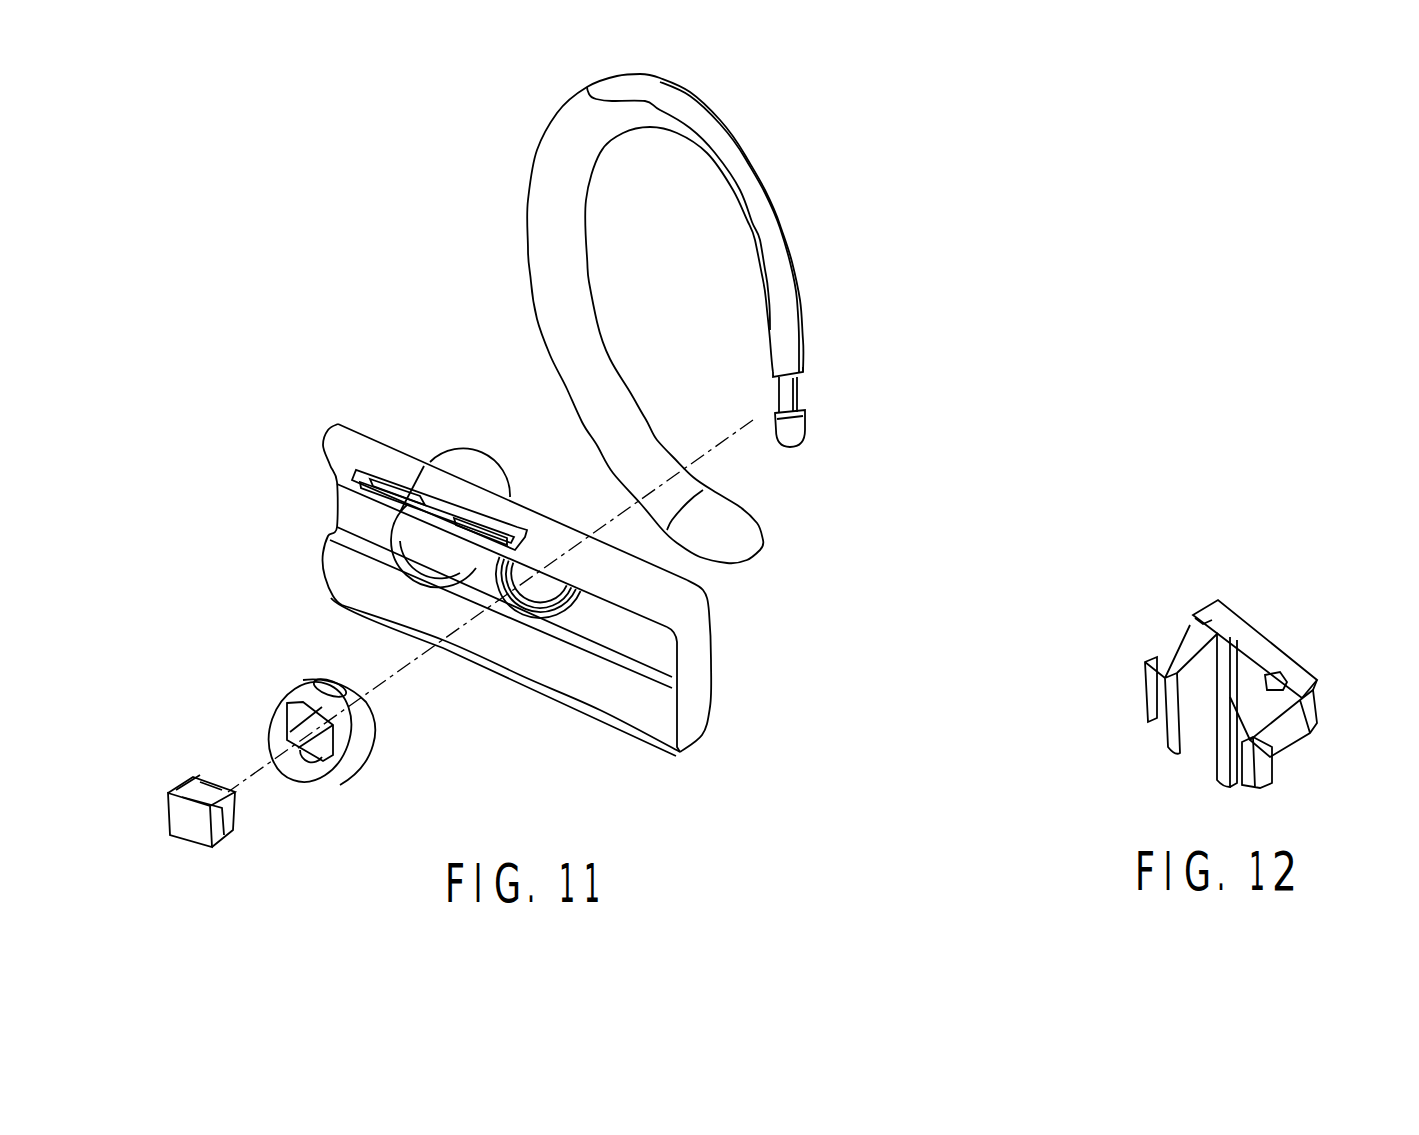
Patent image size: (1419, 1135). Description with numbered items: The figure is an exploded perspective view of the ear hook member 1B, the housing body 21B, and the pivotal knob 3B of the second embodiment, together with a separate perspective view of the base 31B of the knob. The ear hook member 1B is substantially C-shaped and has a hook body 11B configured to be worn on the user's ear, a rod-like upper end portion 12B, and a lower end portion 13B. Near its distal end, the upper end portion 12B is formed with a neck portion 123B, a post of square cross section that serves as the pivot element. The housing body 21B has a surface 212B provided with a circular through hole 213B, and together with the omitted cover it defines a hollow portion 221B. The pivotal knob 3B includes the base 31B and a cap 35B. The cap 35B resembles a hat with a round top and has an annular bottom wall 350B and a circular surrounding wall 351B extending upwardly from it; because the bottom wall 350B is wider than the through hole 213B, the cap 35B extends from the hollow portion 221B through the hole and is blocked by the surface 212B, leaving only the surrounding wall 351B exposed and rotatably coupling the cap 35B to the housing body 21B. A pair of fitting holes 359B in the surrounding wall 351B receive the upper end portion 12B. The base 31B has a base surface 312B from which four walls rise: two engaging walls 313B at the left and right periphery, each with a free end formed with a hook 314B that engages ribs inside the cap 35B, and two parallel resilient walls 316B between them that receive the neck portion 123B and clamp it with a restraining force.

In FIG. 11, the ear hook member 1B is at (505, 160).
In FIG. 11, the hook body 11B is at (568, 145).
In FIG. 11, the upper end portion 12B is at (803, 435).
In FIG. 11, the neck portion (pivot element) 123B is at (797, 396).
In FIG. 11, the lower end portion 13B is at (727, 493).
In FIG. 11, the housing body 21B is at (697, 716).
In FIG. 11, the surface 212B is at (653, 651).
In FIG. 11, the circular through hole 213B is at (543, 588).
In FIG. 11, the hollow portion 221B is at (557, 658).
In FIG. 11, the pivotal knob 3B is at (250, 668).
In FIG. 11, the base 31B is at (193, 860).
In FIG. 12, the base 31B is at (1277, 610).
In FIG. 11, the cap 35B is at (363, 775).
In FIG. 11, the annular bottom wall 350B is at (308, 767).
In FIG. 11, the circular surrounding wall 351B is at (363, 735).
In FIG. 11, the fitting holes 359B is at (325, 687).
In FIG. 12, the base surface 312B is at (1250, 657).
In FIG. 12, the engaging walls 313B is at (1175, 640).
In FIG. 12, the hook 314B is at (1147, 685).
In FIG. 12, the resilient walls 316B is at (1218, 767).